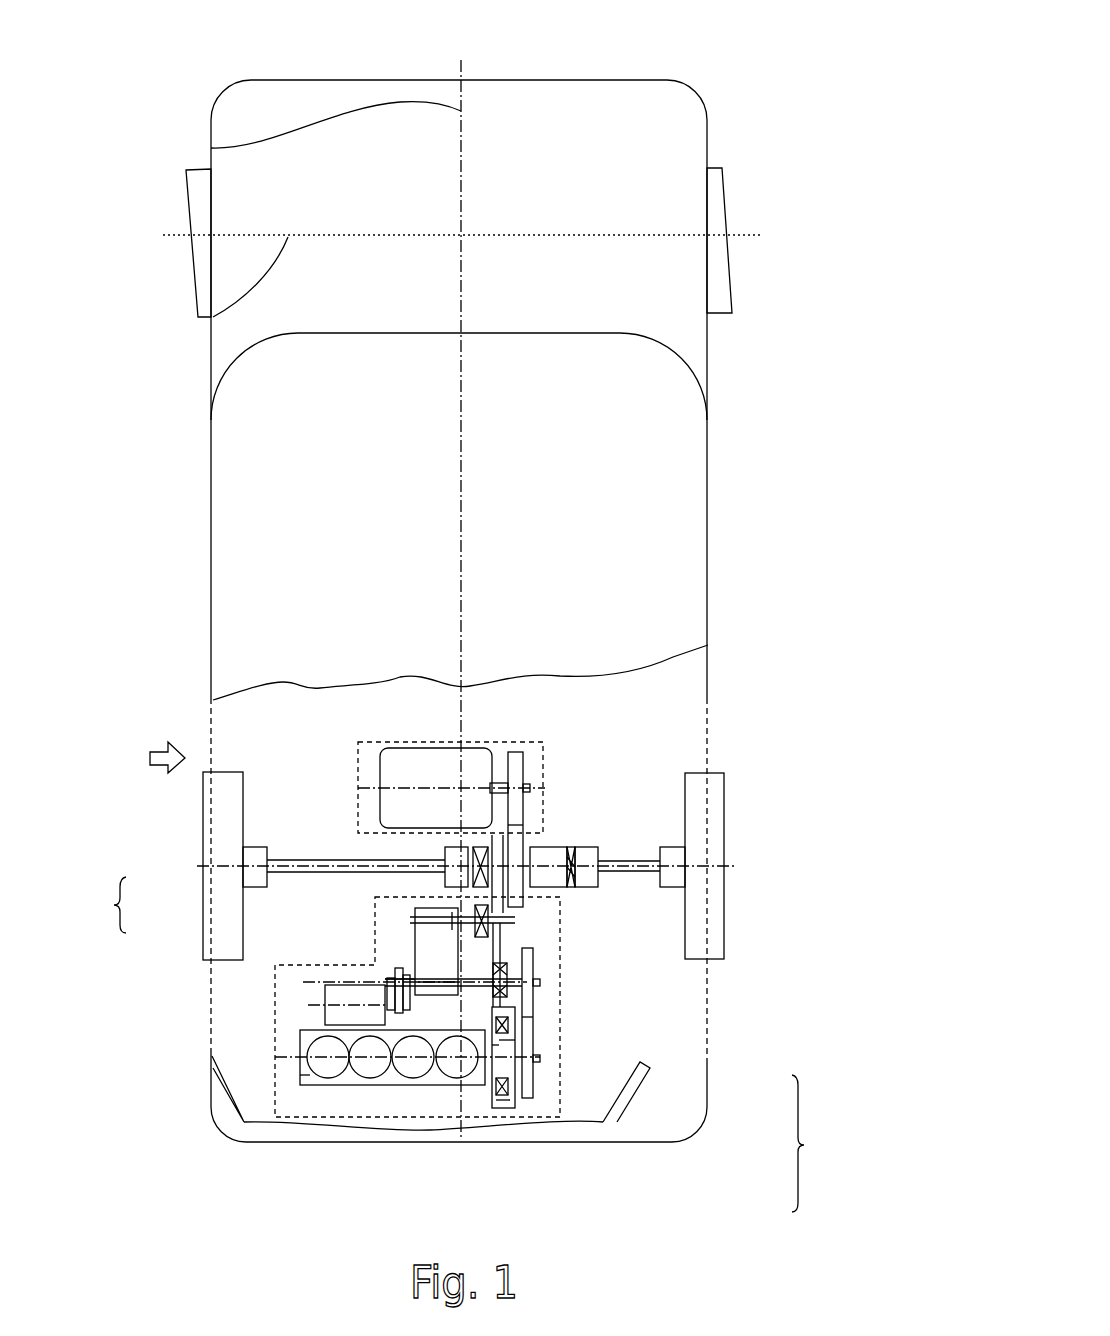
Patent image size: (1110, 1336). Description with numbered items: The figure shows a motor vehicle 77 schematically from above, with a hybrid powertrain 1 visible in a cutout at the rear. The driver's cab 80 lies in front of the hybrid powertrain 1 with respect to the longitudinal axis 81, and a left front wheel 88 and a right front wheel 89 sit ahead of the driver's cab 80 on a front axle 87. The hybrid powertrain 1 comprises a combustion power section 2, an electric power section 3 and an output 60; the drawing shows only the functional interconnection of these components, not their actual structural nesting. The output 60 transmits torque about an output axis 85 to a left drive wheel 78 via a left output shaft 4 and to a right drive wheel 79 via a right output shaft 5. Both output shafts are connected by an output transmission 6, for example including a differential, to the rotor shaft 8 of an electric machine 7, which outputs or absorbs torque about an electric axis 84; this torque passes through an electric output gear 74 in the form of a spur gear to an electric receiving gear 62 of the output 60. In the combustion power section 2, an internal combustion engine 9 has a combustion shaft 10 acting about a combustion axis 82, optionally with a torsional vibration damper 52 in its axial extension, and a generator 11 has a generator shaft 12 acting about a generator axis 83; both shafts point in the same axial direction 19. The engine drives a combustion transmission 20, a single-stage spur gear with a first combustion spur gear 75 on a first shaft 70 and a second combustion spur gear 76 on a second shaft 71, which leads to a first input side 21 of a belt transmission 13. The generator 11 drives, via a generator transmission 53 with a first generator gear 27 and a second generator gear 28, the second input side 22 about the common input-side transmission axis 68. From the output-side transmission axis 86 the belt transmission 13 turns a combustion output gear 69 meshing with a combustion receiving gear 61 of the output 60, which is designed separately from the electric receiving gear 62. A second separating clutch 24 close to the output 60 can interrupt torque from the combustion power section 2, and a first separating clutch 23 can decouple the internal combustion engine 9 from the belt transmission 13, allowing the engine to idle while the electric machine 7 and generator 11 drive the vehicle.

The motor vehicle 77 is at (735, 59).
The longitudinal axis 81 is at (211, 147).
The left front wheel 88 is at (191, 202).
The right front wheel 89 is at (716, 190).
The front axle 87 is at (213, 317).
The driver's cab 80 is at (617, 435).
The hybrid powertrain 1 is at (229, 707).
The axial direction 19 is at (165, 750).
The left drive wheel 78 is at (205, 805).
The right drive wheel 79 is at (720, 789).
The output axis 85 is at (297, 860).
The left output shaft 4 is at (337, 861).
The electric power section 3 is at (365, 740).
The electric machine 7 is at (418, 757).
The electric axis 84 is at (448, 787).
The rotor shaft 8 is at (495, 785).
The electric output gear 74 is at (512, 753).
The belt transmission 13 is at (437, 915).
The electric receiving gear 62 is at (523, 836).
The combustion receiving gear 61 is at (547, 847).
The output transmission 6 is at (540, 826).
The output 60 is at (560, 840).
The right output shaft 5 is at (648, 873).
The second separating clutch 24 is at (505, 899).
The combustion output gear 69 is at (512, 958).
The first separating clutch 23 is at (540, 982).
The first input side 21 is at (463, 990).
The combustion transmission 20 is at (819, 1143).
The second shaft 71 is at (533, 1017).
The second combustion spur gear 76 is at (540, 1058).
The first shaft 70 is at (533, 1095).
The first combustion spur gear 75 is at (520, 1118).
The generator transmission 53 is at (102, 905).
The second generator gear 28 is at (396, 968).
The first generator gear 27 is at (388, 978).
The generator 11 is at (333, 997).
The generator axis 83 is at (308, 1005).
The generator shaft 12 is at (300, 1050).
The combustion power section 2 is at (272, 1087).
The combustion axis 82 is at (290, 1050).
The internal combustion engine 9 is at (310, 1076).
The second input side 22 is at (393, 1015).
The input-side transmission axis 68 is at (427, 982).
The output-side transmission axis 86 is at (452, 920).
The combustion shaft 10 is at (493, 1050).
The torsional vibration damper 52 is at (510, 1107).